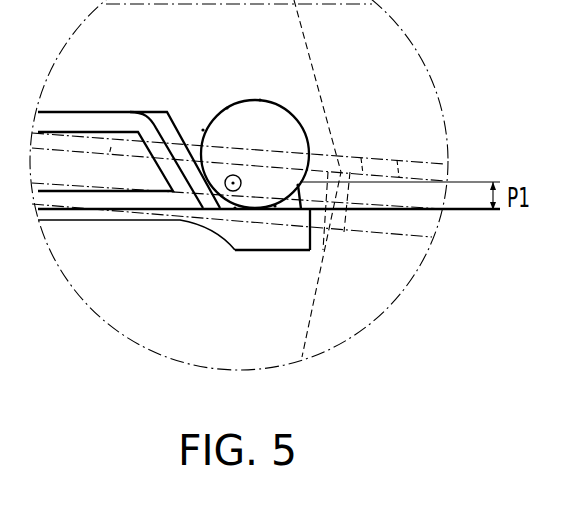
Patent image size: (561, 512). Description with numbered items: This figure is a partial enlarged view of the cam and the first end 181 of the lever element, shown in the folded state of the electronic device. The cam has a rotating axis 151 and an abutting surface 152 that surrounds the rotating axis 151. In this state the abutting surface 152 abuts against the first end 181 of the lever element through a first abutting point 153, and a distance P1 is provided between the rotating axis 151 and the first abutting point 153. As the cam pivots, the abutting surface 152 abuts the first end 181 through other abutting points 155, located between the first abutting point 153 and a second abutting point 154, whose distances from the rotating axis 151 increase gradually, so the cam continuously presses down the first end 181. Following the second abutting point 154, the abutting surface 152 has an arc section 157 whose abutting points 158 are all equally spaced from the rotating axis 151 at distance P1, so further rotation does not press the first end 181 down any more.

The rotating axis 151 is at (225, 183).
The abutting surface 152 is at (260, 210).
The first abutting point 153 is at (235, 208).
The second abutting point 154 is at (309, 140).
The other abutting points 155 is at (300, 208).
The arc section 157 is at (277, 93).
The abutting points on the arc section 158 is at (260, 100).
The first end of the lever element 181 is at (300, 240).